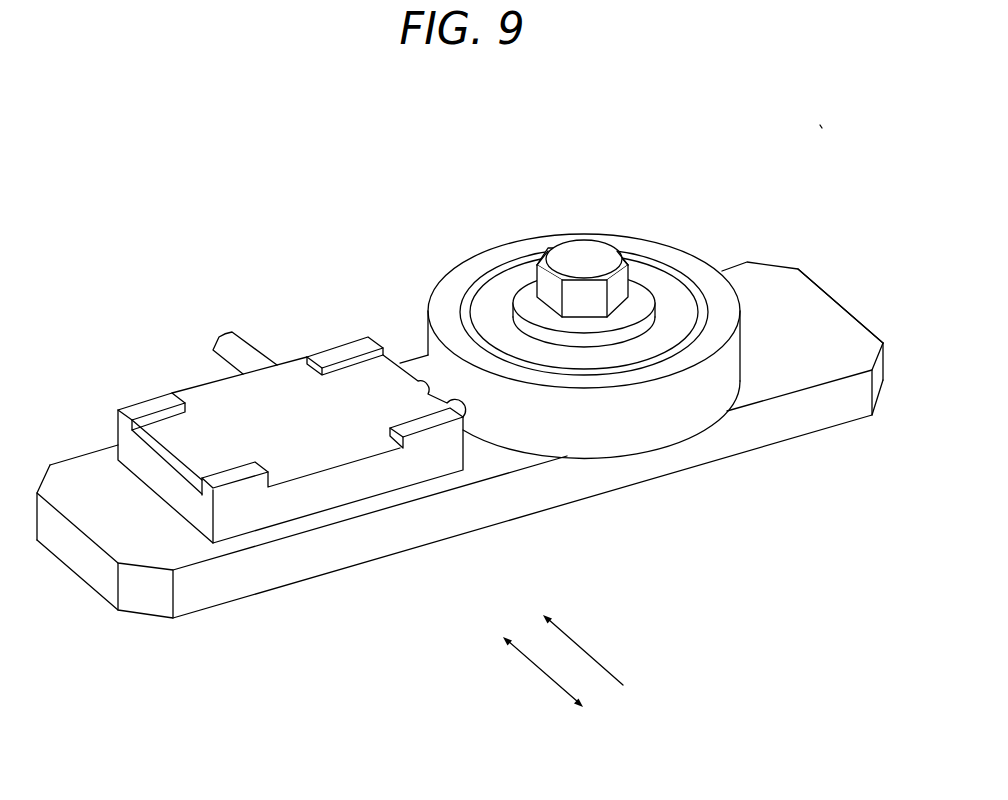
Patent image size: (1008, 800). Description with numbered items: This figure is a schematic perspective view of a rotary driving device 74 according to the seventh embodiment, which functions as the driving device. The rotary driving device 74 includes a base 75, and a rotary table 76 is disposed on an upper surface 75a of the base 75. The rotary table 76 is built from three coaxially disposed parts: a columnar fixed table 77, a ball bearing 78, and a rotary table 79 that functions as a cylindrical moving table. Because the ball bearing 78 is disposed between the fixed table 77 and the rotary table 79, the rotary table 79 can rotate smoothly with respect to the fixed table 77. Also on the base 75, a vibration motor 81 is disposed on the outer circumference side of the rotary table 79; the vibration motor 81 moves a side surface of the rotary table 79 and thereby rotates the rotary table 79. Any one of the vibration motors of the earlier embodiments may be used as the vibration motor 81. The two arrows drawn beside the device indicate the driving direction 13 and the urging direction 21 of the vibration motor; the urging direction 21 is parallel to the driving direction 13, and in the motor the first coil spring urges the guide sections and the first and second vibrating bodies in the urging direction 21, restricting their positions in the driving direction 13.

The rotary driving device 74 is at (806, 141).
The base 75 is at (818, 417).
The upper surface 75a is at (812, 318).
The rotary table 76 is at (615, 167).
The fixed table 77 is at (660, 303).
The ball bearing 78 is at (700, 290).
The rotary table 79 is at (722, 290).
The vibration motor 81 is at (290, 382).
The driving direction 13 is at (543, 677).
The urging direction 21 is at (582, 648).